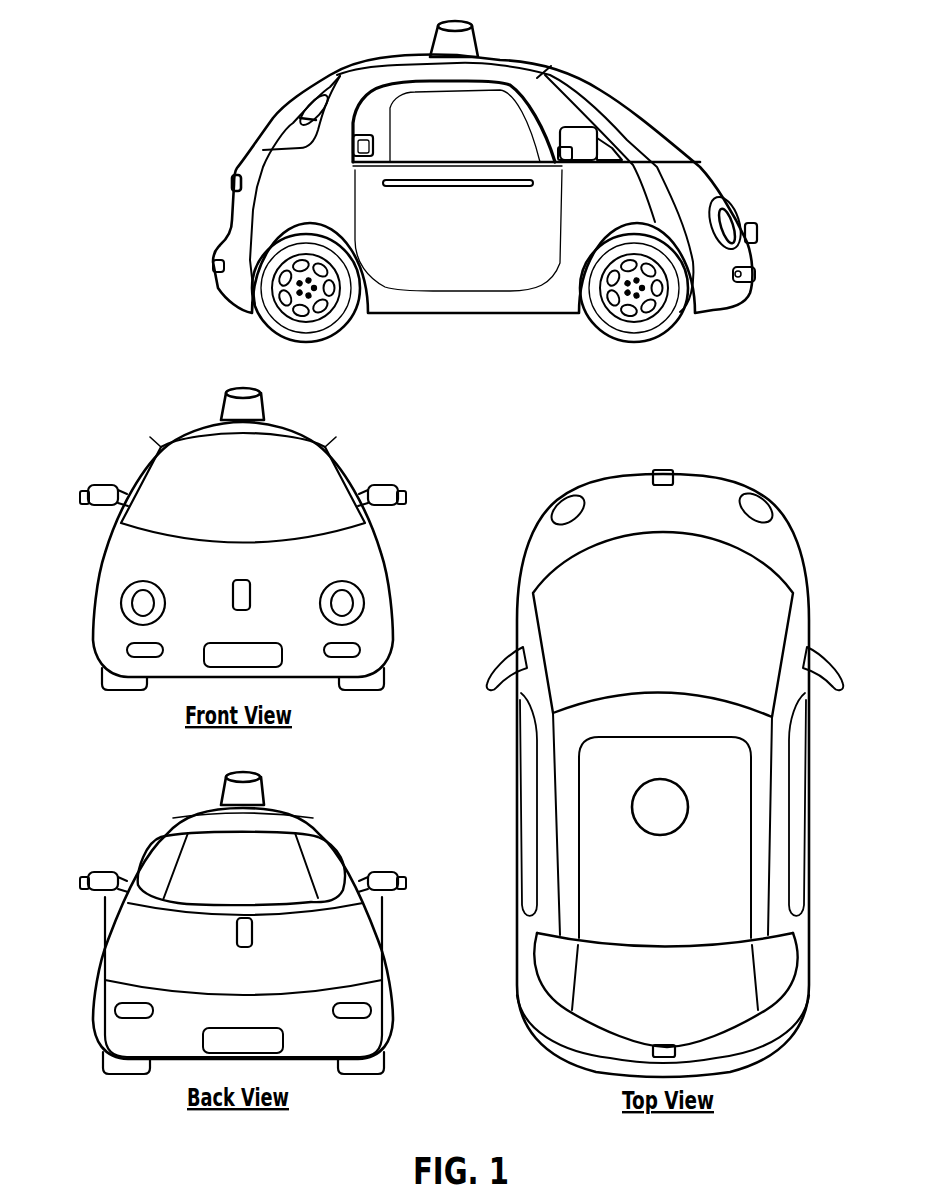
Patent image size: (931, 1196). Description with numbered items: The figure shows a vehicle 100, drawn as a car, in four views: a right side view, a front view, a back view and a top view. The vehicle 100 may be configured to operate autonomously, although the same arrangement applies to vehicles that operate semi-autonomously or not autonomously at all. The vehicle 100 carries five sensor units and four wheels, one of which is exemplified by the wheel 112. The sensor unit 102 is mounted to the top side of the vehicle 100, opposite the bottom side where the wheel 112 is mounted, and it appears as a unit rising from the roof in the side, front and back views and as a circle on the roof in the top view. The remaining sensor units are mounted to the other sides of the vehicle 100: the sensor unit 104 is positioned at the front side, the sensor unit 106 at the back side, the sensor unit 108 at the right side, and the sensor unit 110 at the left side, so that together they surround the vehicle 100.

The vehicle 100 is at (85, 90).
The sensor unit 102 is at (480, 44).
The sensor unit 104 is at (758, 233).
The sensor unit 106 is at (232, 186).
The sensor unit 108 is at (563, 158).
The sensor unit 110 is at (406, 498).
The wheel 112 is at (648, 338).